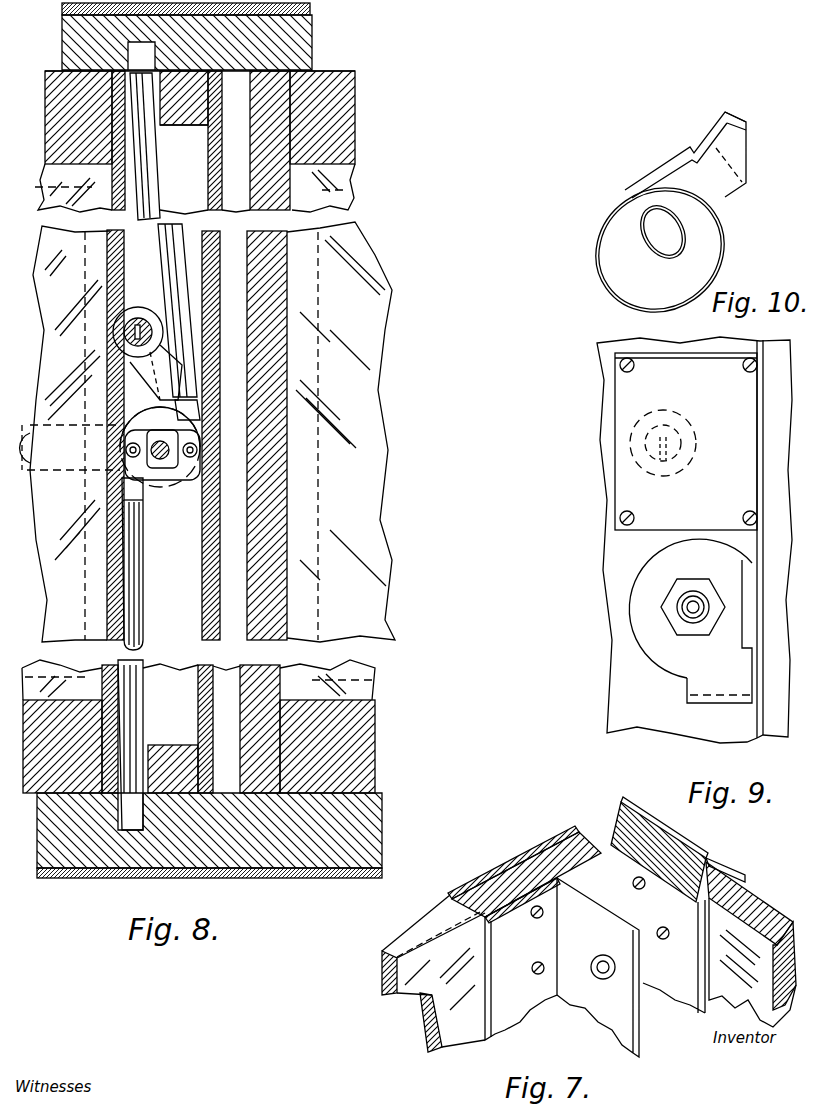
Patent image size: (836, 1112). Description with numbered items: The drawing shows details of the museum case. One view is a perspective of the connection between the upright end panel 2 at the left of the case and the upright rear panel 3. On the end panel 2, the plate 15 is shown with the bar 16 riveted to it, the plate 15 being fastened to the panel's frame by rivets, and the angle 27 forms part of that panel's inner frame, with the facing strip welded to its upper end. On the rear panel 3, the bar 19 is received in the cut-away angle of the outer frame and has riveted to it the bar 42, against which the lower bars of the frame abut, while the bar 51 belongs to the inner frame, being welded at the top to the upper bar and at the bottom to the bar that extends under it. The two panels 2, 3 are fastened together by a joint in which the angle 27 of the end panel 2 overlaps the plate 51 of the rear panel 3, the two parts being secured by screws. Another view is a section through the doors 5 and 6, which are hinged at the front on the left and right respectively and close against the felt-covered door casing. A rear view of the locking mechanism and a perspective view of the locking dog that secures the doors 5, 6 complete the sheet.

In FIG. 8, the door 5 is at (45, 107).
In FIG. 8, the door 6 is at (355, 134).
In FIG. 7, the panel 2 is at (465, 893).
In FIG. 7, the panel 3 is at (737, 867).
In FIG. 7, the plate 15 is at (498, 866).
In FIG. 7, the bar 16 is at (527, 872).
In FIG. 7, the bar 19 is at (634, 810).
In FIG. 7, the bar 42 is at (698, 850).
In FIG. 7, the angle 27 is at (611, 1036).
In FIG. 7, the bar 51 is at (690, 1004).